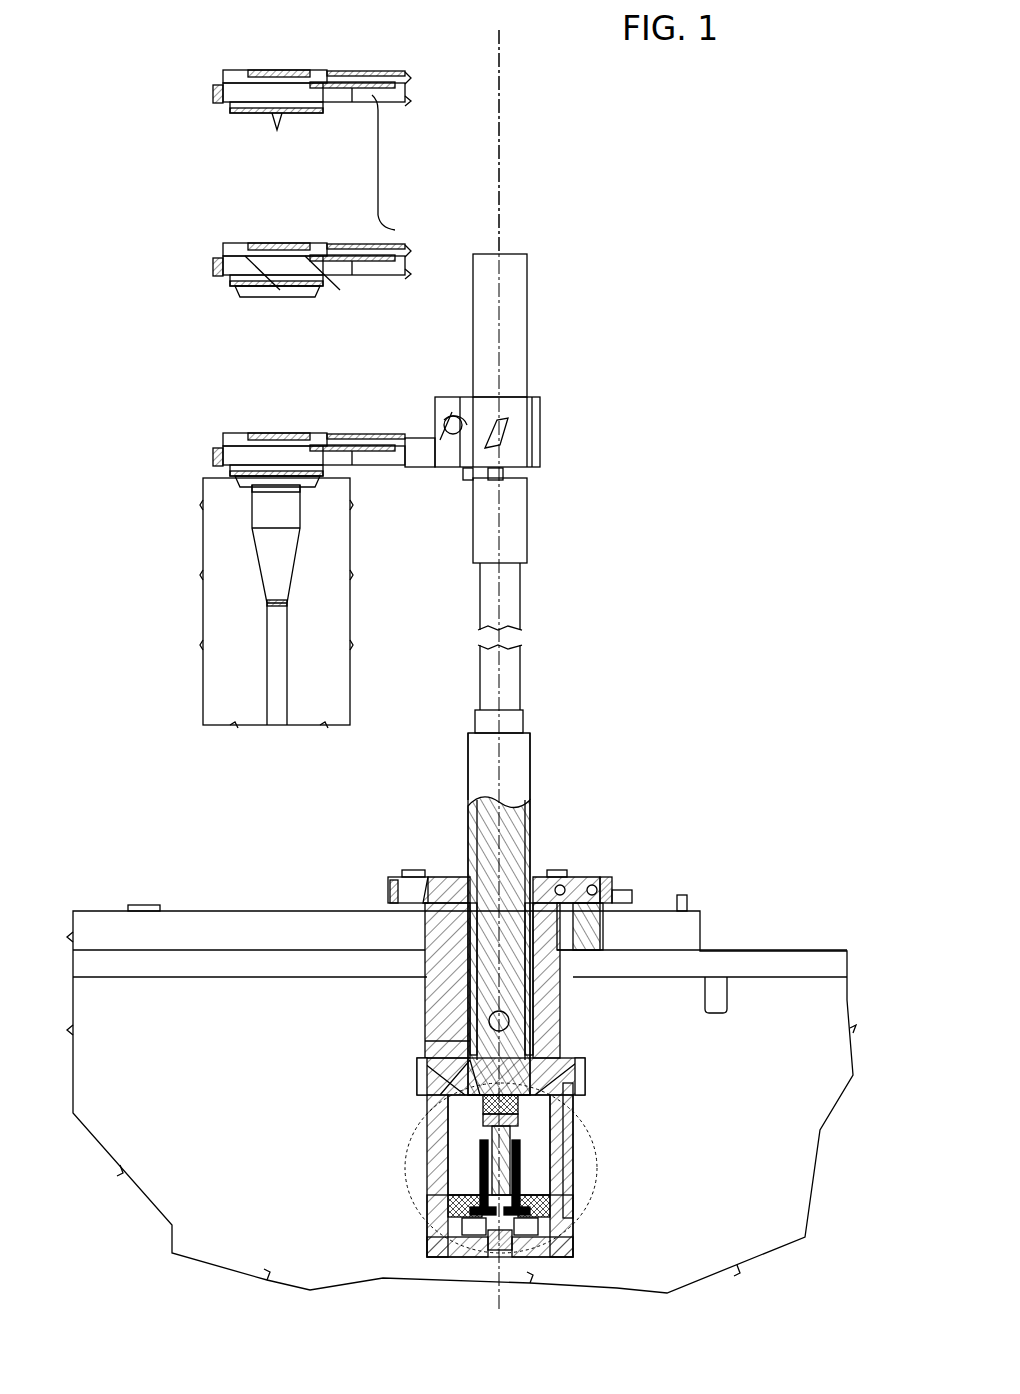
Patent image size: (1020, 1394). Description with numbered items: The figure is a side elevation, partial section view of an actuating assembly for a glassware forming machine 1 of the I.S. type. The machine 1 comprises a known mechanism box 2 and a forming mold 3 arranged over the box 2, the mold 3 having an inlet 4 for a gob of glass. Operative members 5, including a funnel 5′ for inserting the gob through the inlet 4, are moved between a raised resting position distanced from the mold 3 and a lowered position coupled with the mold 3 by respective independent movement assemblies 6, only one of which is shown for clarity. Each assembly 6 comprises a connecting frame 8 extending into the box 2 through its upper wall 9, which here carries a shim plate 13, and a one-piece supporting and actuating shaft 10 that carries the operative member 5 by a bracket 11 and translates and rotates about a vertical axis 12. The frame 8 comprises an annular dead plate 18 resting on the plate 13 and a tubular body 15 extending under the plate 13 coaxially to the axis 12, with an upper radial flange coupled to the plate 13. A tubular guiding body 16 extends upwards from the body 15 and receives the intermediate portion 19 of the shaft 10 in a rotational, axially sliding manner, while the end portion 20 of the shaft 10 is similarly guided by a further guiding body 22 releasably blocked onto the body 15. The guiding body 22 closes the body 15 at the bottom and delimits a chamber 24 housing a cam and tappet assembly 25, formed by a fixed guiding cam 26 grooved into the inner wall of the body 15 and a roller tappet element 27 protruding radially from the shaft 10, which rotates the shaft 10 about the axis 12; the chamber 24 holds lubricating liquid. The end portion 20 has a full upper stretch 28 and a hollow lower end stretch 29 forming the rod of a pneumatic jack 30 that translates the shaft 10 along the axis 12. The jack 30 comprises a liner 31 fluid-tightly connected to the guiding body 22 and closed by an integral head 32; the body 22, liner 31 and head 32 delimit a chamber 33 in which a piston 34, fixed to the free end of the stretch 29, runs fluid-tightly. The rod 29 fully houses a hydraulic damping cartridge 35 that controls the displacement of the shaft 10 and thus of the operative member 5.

The glassware forming machine 1 is at (725, 592).
The mechanism box 2 is at (782, 950).
The forming mold 3 is at (202, 512).
The inlet 4 is at (255, 488).
The operative members 5 is at (230, 390).
The funnel 5′ is at (332, 290).
The movement assembly 6 is at (612, 652).
The connecting frame 8 is at (355, 884).
The upper wall 9 is at (800, 977).
The supporting and actuating shaft 10 is at (527, 588).
The bracket 11 is at (393, 243).
The vertical axis 12 is at (499, 150).
The shim plate 13 is at (182, 911).
The tubular body 15 is at (437, 990).
The tubular guiding body 16 is at (468, 795).
The annular dead plate 18 is at (578, 875).
The intermediate portion 19 is at (470, 878).
The end portion 20 is at (482, 1147).
The guiding body 22 is at (577, 1080).
The chamber 24 is at (525, 1003).
The cam and tappet assembly 25 is at (462, 1018).
The fixed guiding cam 26 is at (437, 962).
The tappet element 27 is at (437, 1041).
The full upper stretch 28 is at (463, 1090).
The hollow lower end stretch 29 is at (505, 1165).
The pneumatic jack 30 is at (408, 1237).
The liner 31 is at (578, 1105).
The head 32 is at (547, 1255).
The chamber 33 is at (547, 1137).
The piston 34 is at (535, 1220).
The hydraulic damping cartridge 35 is at (460, 1193).